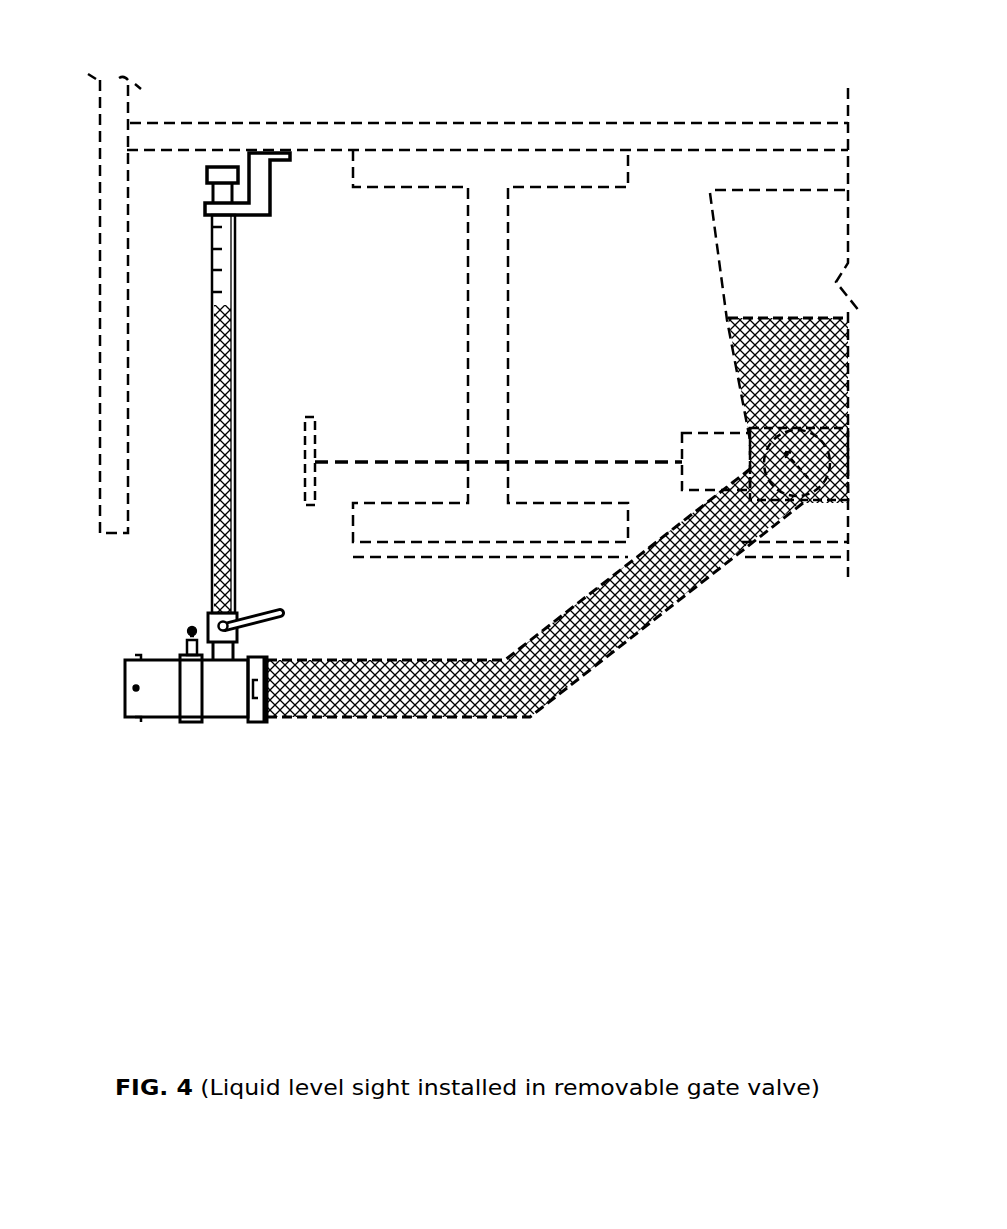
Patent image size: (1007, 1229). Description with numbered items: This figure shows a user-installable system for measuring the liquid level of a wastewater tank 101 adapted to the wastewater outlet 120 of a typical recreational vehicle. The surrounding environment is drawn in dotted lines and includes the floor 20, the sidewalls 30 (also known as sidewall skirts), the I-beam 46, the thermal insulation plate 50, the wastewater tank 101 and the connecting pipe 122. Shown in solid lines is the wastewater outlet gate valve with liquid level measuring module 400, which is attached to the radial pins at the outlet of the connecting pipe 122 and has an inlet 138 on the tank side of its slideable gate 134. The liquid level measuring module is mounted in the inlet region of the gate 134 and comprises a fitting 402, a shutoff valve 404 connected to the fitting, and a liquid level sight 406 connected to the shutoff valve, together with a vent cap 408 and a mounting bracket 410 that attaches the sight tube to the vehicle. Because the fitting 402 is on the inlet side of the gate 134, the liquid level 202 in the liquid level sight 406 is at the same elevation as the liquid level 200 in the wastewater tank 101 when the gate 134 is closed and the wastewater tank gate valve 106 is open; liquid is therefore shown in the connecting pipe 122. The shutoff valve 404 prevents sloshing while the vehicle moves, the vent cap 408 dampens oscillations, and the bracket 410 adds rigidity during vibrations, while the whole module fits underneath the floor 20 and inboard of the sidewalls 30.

The floor 20 is at (157, 135).
The sidewalls 30 is at (112, 180).
The I-beam 46 is at (540, 167).
The wastewater tank 101 is at (728, 203).
The wastewater tank gate valve 106 is at (682, 432).
The liquid level 200 is at (815, 318).
The thermal insulation plate 50 is at (775, 548).
The connecting pipe 122 is at (607, 653).
The wastewater outlet gate valve with liquid level measuring module 400 is at (194, 411).
The vent cap 408 is at (214, 167).
The mounting bracket 410 is at (258, 165).
The liquid level sight 406 is at (212, 257).
The liquid level 202 is at (215, 305).
The shutoff valve 404 is at (213, 622).
The fitting 402 is at (240, 650).
The slideable gate 134 is at (185, 650).
The wastewater outlet 120 is at (125, 697).
The inlet 138 is at (272, 718).